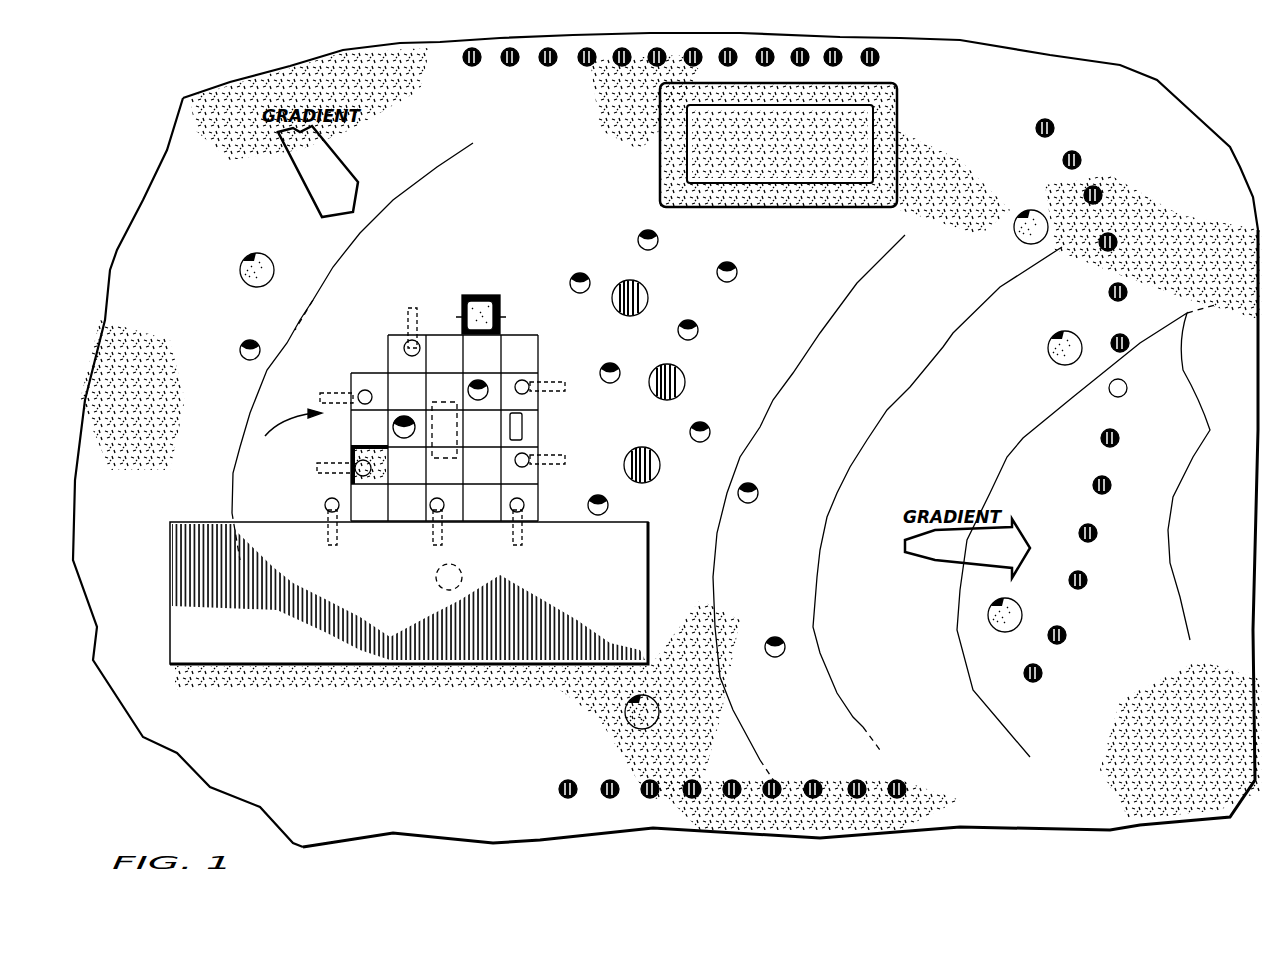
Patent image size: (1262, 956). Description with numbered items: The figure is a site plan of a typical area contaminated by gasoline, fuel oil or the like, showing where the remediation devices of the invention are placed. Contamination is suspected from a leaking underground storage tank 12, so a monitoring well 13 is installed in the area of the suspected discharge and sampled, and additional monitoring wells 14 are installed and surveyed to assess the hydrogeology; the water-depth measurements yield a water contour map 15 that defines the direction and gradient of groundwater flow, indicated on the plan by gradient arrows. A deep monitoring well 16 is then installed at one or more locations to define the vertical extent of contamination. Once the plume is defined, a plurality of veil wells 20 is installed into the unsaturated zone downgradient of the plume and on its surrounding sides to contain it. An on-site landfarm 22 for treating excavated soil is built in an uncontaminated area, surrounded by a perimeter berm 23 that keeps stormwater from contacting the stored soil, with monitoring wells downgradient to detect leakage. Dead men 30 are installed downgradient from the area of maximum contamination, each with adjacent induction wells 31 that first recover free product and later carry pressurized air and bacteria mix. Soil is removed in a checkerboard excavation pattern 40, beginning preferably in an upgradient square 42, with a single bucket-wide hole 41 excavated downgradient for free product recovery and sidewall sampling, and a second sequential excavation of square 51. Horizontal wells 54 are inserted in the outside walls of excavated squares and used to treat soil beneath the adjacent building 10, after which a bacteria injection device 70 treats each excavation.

The building 10 is at (650, 578).
The underground storage tank 12 is at (444, 402).
The monitoring well 13 is at (404, 416).
The monitoring wells 14 is at (241, 352).
The water contour map 15 is at (437, 167).
The deep monitoring well 16 is at (240, 268).
The veil wells 20 is at (580, 80).
The landfarm 22 is at (908, 165).
The perimeter berm 23 is at (808, 196).
The dead men 30 is at (648, 293).
The induction wells 31 is at (638, 240).
The checkerboard excavation pattern 40 is at (286, 435).
The single bucket-wide hole 41 is at (525, 425).
The square 42 is at (372, 510).
The square 51 is at (375, 470).
The horizontal wells 54 is at (407, 311).
The bacteria injection device 70 is at (476, 296).